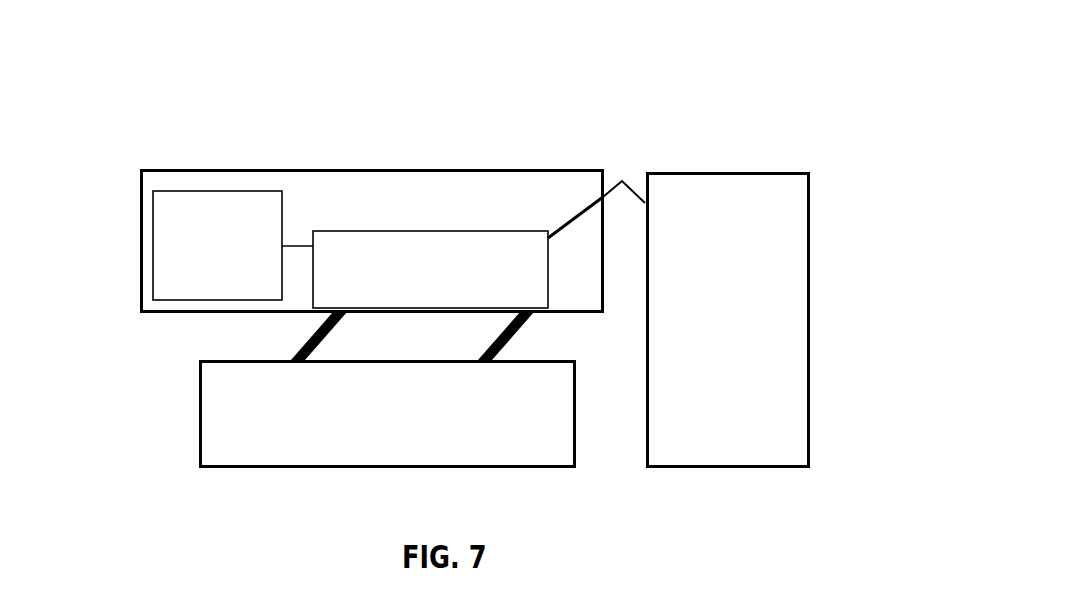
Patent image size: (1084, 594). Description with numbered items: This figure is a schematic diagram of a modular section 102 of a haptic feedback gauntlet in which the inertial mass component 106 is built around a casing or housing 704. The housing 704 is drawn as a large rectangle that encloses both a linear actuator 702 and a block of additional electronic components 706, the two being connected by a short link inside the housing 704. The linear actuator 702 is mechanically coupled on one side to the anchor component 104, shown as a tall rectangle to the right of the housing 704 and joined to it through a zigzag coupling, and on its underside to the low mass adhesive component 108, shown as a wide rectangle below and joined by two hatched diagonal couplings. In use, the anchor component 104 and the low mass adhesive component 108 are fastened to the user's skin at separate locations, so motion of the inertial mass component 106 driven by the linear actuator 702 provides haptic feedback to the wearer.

The modular section 102 is at (519, 120).
The anchor component 104 is at (744, 326).
The inertial mass component 106 is at (394, 197).
The low mass adhesive component 108 is at (405, 429).
The linear actuator 702 is at (447, 283).
The housing 704 is at (290, 168).
The additional electronic components 706 is at (233, 260).